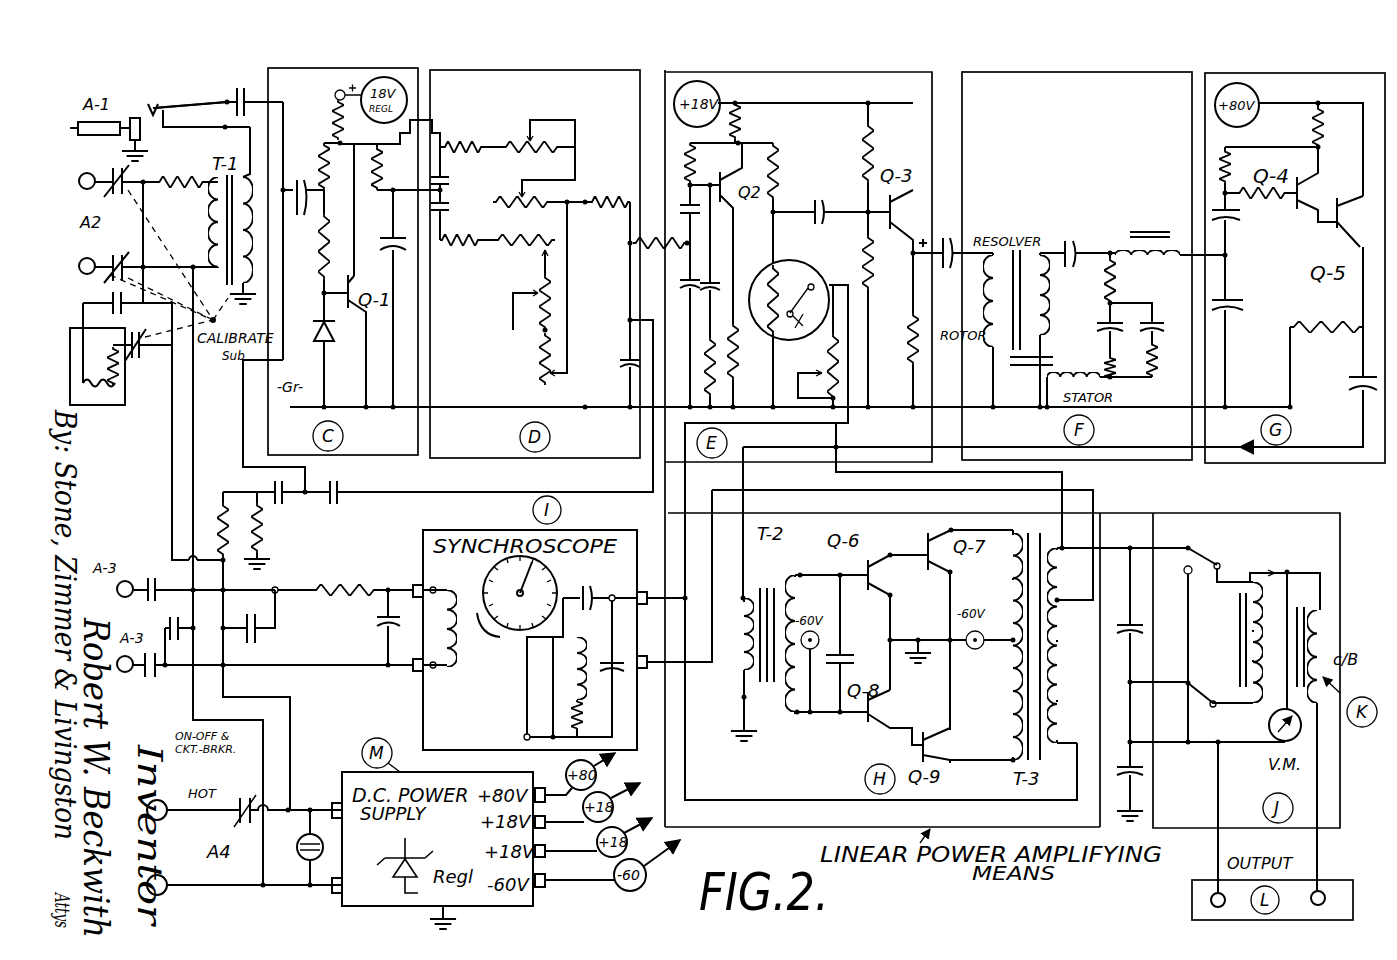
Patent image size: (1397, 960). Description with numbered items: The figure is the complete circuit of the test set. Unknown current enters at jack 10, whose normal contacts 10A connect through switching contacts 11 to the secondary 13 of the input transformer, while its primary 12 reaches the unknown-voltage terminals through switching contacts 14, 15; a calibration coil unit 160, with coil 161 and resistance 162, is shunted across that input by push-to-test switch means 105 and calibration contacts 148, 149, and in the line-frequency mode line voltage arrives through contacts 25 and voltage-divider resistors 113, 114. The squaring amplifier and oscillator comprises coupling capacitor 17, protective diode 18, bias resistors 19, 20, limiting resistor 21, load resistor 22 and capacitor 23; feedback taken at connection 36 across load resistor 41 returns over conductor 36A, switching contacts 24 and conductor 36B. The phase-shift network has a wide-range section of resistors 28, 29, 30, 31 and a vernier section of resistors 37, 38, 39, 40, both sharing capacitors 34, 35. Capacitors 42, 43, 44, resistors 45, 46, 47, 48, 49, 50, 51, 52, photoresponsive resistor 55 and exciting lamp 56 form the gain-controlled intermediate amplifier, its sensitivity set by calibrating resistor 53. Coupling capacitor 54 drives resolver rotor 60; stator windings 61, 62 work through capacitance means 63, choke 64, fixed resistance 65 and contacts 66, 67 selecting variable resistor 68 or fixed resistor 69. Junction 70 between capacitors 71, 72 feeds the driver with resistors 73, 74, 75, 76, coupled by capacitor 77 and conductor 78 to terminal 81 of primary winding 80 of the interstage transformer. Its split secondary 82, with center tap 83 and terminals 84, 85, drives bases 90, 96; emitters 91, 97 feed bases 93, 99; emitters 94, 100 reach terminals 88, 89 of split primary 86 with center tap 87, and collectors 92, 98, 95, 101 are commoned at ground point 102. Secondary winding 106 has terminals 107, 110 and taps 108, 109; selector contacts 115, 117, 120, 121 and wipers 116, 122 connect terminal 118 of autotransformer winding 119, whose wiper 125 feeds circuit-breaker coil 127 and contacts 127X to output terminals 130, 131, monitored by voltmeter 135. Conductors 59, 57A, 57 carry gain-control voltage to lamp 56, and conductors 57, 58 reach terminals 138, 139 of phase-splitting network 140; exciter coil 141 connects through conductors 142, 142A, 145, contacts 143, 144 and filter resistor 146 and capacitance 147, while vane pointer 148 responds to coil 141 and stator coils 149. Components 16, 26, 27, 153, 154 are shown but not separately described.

The switch 10 is at (140, 96).
The switch blade 10A is at (187, 105).
The capacitor 11 is at (256, 79).
The ganged tuning coupling 12 is at (210, 240).
The transformer secondary lead 13 is at (256, 262).
The variable capacitor 14 is at (110, 162).
The variable capacitor 15 is at (148, 257).
The resistor 16 is at (180, 224).
The capacitor 17 is at (300, 217).
The diode 18 is at (330, 346).
The resistor 19 is at (329, 250).
The resistor 20 is at (318, 165).
The resistor 21 is at (332, 125).
The resistor 22 is at (381, 165).
The capacitor 23 is at (388, 236).
The capacitor 24 is at (342, 487).
The capacitor 25 is at (293, 500).
The capacitor 26 is at (452, 180).
The capacitor 27 is at (455, 210).
The resistor 28 is at (478, 145).
The potentiometer 29 is at (562, 142).
The potentiometer 30 is at (562, 200).
The resistor 31 is at (617, 262).
The conductor 34 is at (621, 396).
The capacitor 35 is at (620, 362).
The resistor 36 is at (641, 249).
The conductor 36A is at (284, 330).
The conductor 36B is at (251, 413).
The resistor 37 is at (466, 259).
The potentiometer 38 is at (533, 250).
The potentiometer 39 is at (530, 285).
The potentiometer 40 is at (540, 362).
The capacitor 41 is at (671, 342).
The capacitor 42 is at (715, 276).
The capacitor 43 is at (675, 205).
The capacitor 44 is at (823, 200).
The resistor 45 is at (713, 233).
The resistor 46 is at (742, 125).
The resistor 47 is at (778, 172).
The resistor 48 is at (748, 365).
The resistor 49 is at (722, 372).
The resistor 50 is at (874, 160).
The resistor 51 is at (874, 288).
The resistor 52 is at (909, 328).
The potentiometer 53 is at (850, 378).
The capacitor 54 is at (950, 240).
The meter resistance 55 is at (760, 275).
The meter 56 is at (808, 268).
The conductor 57 is at (852, 420).
The conductor 57A is at (690, 786).
The conductor 58 is at (836, 470).
The conductor 59 is at (833, 445).
The resolver rotor winding 60 is at (993, 328).
The resolver stator winding 61 is at (1050, 290).
The resolver stator winding 62 is at (1095, 382).
The capacitor 63 is at (1075, 248).
The inductor 64 is at (1150, 232).
The resistor 65 is at (1118, 285).
The capacitor 66 is at (1097, 328).
The capacitor 67 is at (1158, 325).
The resistor 68 is at (1106, 365).
The resistor 69 is at (1159, 348).
The conductor 70 is at (1235, 258).
The capacitor 71 is at (1245, 305).
The capacitor 72 is at (1243, 220).
The resistor 73 is at (1258, 208).
The resistor 74 is at (1222, 172).
The resistor 75 is at (1325, 130).
The resistor 76 is at (1326, 301).
The capacitor 77 is at (1347, 387).
The conductor 78 is at (1140, 447).
The transformer primary winding 80 is at (741, 620).
The primary lead 81 is at (742, 598).
The secondary winding section 82 is at (797, 695).
The secondary winding section 83 is at (813, 671).
The transformer secondary winding 84 is at (770, 548).
The secondary lead 85 is at (793, 732).
The primary winding section 86 is at (1010, 586).
The bias terminal 87 is at (975, 650).
The primary lead 88 is at (1013, 528).
The primary winding section 89 is at (1010, 745).
The transistor Q-6 emitter circuit 90 is at (884, 622).
The transistor Q-6 collector 91 is at (890, 553).
The transistor Q-6 emitter 92 is at (890, 595).
The transistor Q-7 base 93 is at (925, 548).
The transistor Q-7 collector lead 94 is at (1068, 528).
The conductor 95 is at (893, 630).
The transistor Q-8 emitter 96 is at (868, 730).
The transistor Q-9 base lead 97 is at (880, 735).
The capacitor 98 is at (855, 660).
The conductor 99 is at (948, 715).
The transistor Q-9 emitter 100 is at (950, 765).
The conductor 101 is at (950, 705).
The ground connection 102 is at (920, 637).
The ground lead 105 is at (243, 292).
The secondary winding section 106 is at (1062, 645).
The secondary winding section 107 is at (1060, 555).
The secondary winding tap 108 is at (1079, 604).
The secondary winding section 109 is at (1063, 697).
The secondary winding section 110 is at (1079, 730).
The resistor 113 is at (216, 500).
The resistor 114 is at (263, 534).
The conductor 115 is at (1189, 545).
The switch 116 is at (1208, 560).
The conductor 117 is at (1212, 590).
The transformer winding 118 is at (1253, 580).
The transformer core 119 is at (1250, 628).
The transformer winding 120 is at (1226, 660).
The conductor 121 is at (1190, 720).
The switch 122 is at (1192, 690).
The connection 125 is at (1280, 568).
The circuit breaker coil 127 is at (1320, 615).
The on-off circuit breaker 127X is at (245, 796).
The output terminal 130 is at (1325, 890).
The output terminal 131 is at (1210, 900).
The voltmeter 135 is at (1300, 730).
The synchroscope input lead 138 is at (652, 560).
The synchroscope input lead 139 is at (660, 670).
The synchroscope network 140 is at (518, 708).
The synchroscope coil 141 is at (450, 651).
The input connection 142 is at (407, 580).
The conductor 142A is at (297, 588).
The capacitor 143 is at (165, 556).
The capacitor 144 is at (140, 680).
The conductor 145 is at (333, 670).
The resistor 146 is at (355, 588).
The capacitor 147 is at (376, 620).
The capacitor 148 is at (290, 478).
The variable capacitor 149 is at (142, 336).
The capacitor 153 is at (160, 636).
The capacitor 154 is at (258, 640).
The calibration network 160 is at (100, 412).
The inductor 161 is at (116, 400).
The resistor 162 is at (120, 366).